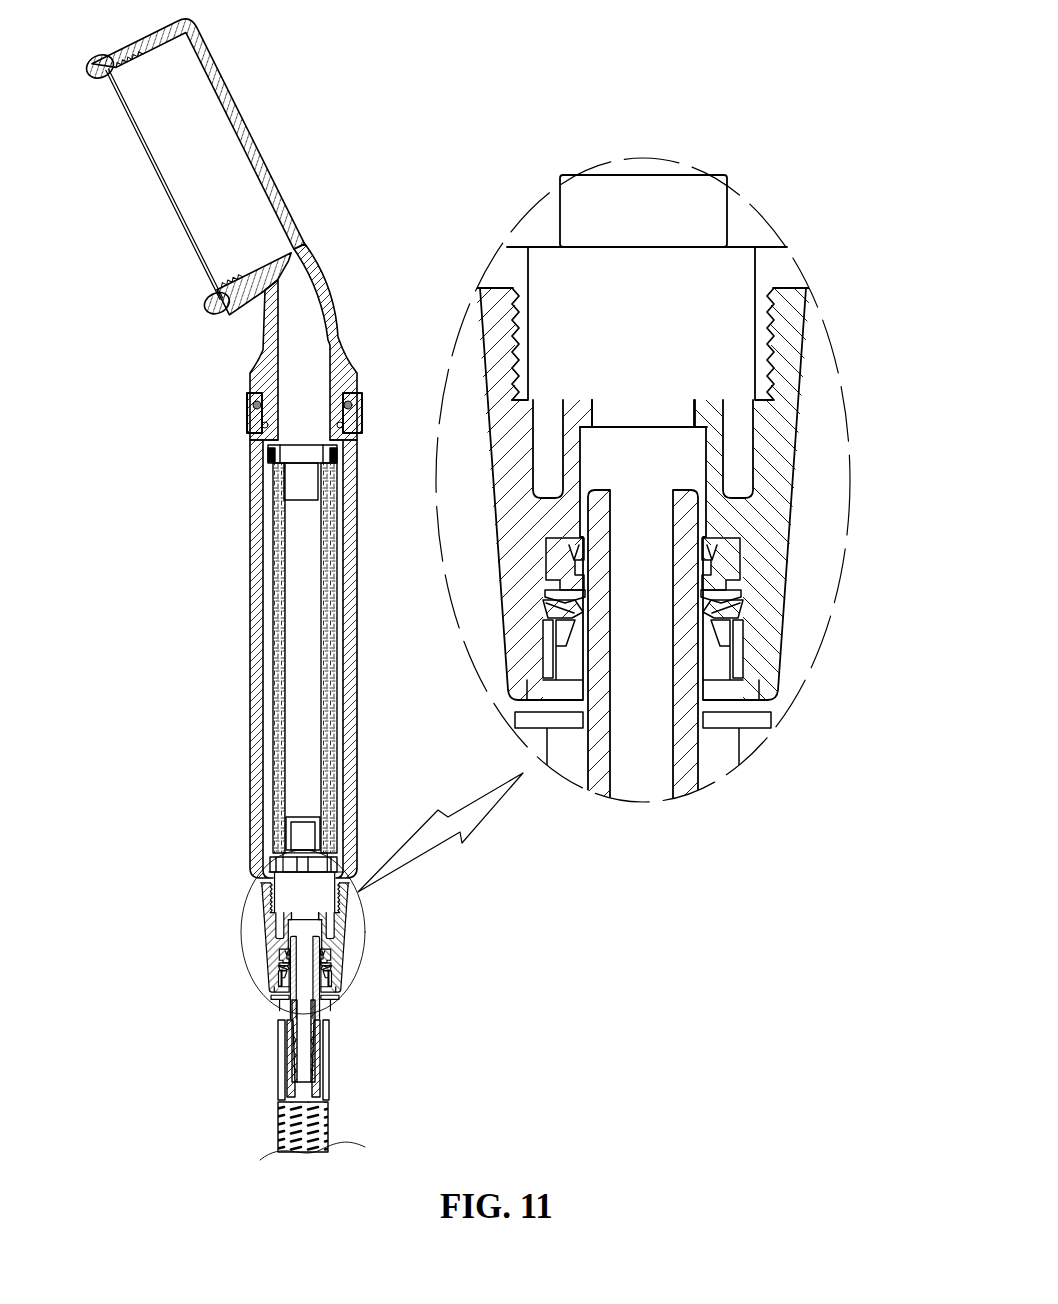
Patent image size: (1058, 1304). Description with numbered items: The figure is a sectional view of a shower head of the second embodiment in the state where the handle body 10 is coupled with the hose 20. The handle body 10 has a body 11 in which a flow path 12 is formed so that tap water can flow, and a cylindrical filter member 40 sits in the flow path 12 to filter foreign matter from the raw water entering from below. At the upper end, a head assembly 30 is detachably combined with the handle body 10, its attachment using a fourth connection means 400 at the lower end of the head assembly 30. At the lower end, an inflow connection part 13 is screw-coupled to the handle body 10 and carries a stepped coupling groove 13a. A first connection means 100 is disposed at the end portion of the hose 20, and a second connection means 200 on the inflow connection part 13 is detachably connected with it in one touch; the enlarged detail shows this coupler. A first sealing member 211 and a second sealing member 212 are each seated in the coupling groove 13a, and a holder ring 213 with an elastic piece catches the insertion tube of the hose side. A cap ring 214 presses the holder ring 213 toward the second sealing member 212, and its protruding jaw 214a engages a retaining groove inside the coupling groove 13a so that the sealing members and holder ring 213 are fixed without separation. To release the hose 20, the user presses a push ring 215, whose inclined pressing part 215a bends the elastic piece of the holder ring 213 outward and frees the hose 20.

The handle body 10 is at (247, 573).
The hose 20 is at (273, 1117).
The head assembly 30 is at (273, 157).
The filter member 40 is at (262, 513).
The first connection means 100 is at (263, 1007).
The second connection means 200 is at (270, 953).
The fourth connection means 400 is at (343, 327).
The body 11 is at (687, 502).
The flow path 12 is at (743, 590).
The inflow connection part 13 is at (787, 358).
The coupling groove 13a is at (703, 550).
The first sealing member 211 is at (547, 547).
The second sealing member 212 is at (540, 587).
The holder ring 213 is at (540, 607).
The cap ring 214 is at (540, 670).
The protruding jaw 214a is at (730, 607).
The push ring 215 is at (523, 710).
The inclined pressing part 215a is at (713, 640).